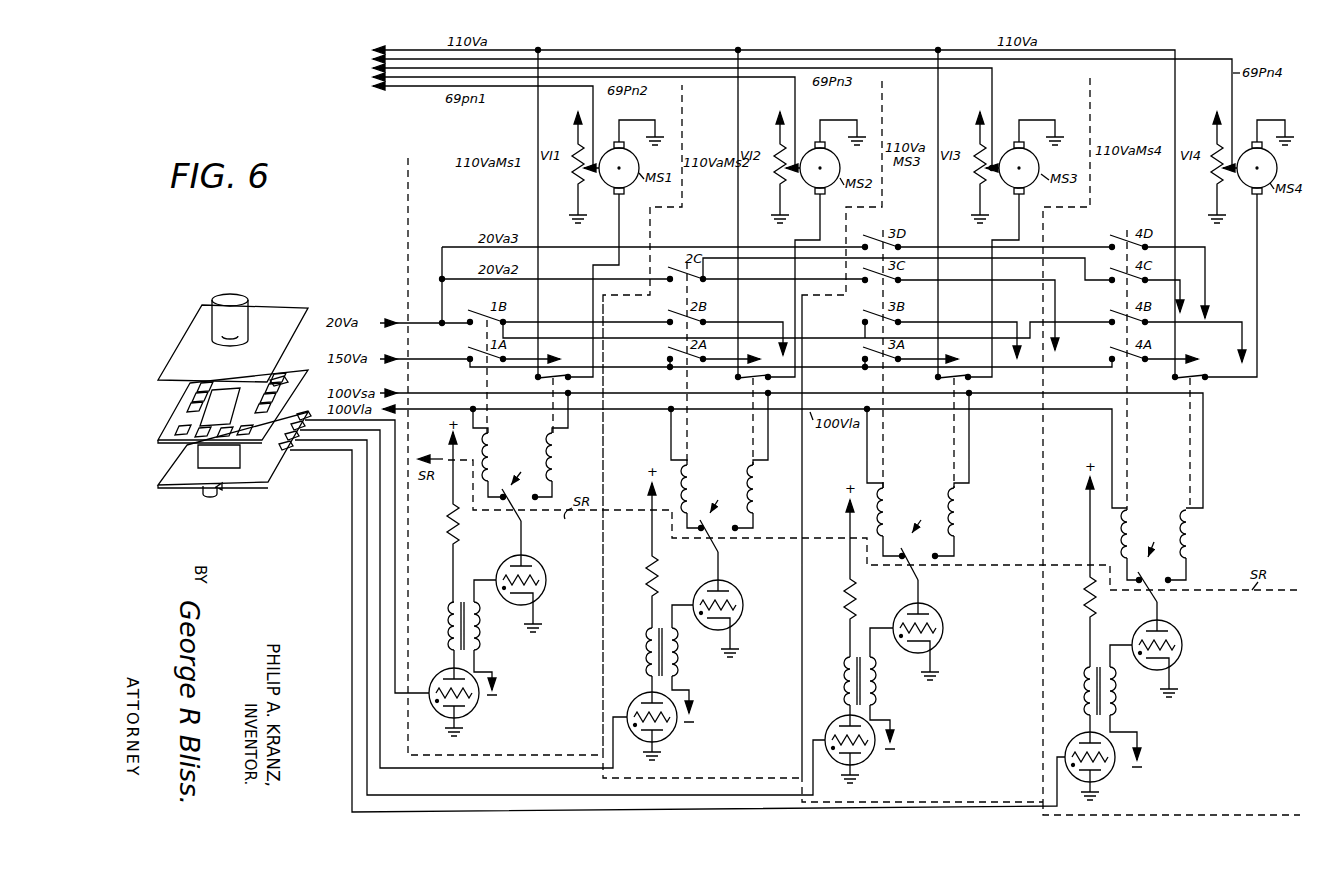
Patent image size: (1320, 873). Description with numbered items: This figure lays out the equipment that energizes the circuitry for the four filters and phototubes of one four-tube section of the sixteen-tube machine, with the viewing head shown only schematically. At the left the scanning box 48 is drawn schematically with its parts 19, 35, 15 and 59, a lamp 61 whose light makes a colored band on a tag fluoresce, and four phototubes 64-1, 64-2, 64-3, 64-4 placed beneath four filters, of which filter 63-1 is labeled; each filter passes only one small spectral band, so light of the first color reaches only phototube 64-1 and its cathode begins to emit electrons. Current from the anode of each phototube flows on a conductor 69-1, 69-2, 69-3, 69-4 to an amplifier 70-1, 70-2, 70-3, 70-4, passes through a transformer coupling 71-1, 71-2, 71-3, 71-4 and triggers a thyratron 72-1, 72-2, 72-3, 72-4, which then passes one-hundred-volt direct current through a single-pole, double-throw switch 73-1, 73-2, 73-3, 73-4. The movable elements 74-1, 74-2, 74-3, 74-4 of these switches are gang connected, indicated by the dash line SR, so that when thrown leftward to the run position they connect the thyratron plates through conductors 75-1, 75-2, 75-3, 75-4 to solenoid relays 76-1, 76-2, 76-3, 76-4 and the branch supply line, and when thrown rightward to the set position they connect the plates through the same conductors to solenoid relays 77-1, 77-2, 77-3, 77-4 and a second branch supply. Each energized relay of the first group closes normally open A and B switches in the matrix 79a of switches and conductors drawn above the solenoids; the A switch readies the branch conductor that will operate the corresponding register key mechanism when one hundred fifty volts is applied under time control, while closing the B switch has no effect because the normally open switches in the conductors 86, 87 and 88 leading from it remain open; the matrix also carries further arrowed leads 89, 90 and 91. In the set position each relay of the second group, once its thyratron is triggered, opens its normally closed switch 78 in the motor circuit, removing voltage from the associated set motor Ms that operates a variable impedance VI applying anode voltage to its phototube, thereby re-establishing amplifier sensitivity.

The scanning box 48 is at (230, 393).
The plunger 19 is at (240, 300).
The plunger tip 35 is at (226, 338).
The upper plate 15 is at (182, 362).
The filter 63-1 is at (281, 380).
The punched card 59 is at (232, 410).
The phototube 64-1 is at (302, 413).
The phototube 64-2 is at (296, 432).
The phototube 64-3 is at (290, 442).
The phototube 64-4 is at (283, 452).
The lamp 61 is at (213, 497).
The conductor 69-1 is at (395, 653).
The conductor 69-2 is at (380, 615).
The conductor 69-3 is at (367, 575).
The conductor 69-4 is at (352, 538).
The matrix of switches and conductors 79a is at (395, 190).
The normally closed switch 78 is at (543, 380).
The conductor 86 is at (546, 322).
The conductor 87 is at (614, 340).
The conductor 88 is at (972, 340).
The conductor 89 is at (1056, 300).
The conductor 90 is at (1183, 284).
The conductor 91 is at (1208, 288).
The amplifier 70-1 is at (470, 712).
The amplifier 70-2 is at (678, 742).
The amplifier 70-3 is at (880, 762).
The amplifier 70-4 is at (1115, 778).
The transformer coupling 71-1 is at (448, 630).
The transformer coupling 71-2 is at (648, 666).
The transformer coupling 71-3 is at (846, 683).
The transformer coupling 71-4 is at (1085, 695).
The thyratron 72-1 is at (546, 586).
The thyratron 72-2 is at (743, 610).
The thyratron 72-3 is at (945, 632).
The thyratron 72-4 is at (1185, 645).
The single-pole double-throw switch 73-1 is at (523, 470).
The single-pole double-throw switch 73-2 is at (720, 498).
The single-pole double-throw switch 73-3 is at (921, 517).
The single-pole double-throw switch 73-4 is at (1155, 540).
The movable switch element 74-1 is at (523, 501).
The movable switch element 74-2 is at (720, 532).
The movable switch element 74-3 is at (921, 560).
The movable switch element 74-4 is at (1157, 583).
The conductor 75-1 is at (523, 546).
The conductor 75-2 is at (722, 574).
The conductor 75-3 is at (922, 601).
The conductor 75-4 is at (1162, 620).
The solenoid relay 76-1 is at (492, 457).
The solenoid relay 76-2 is at (695, 464).
The solenoid relay 76-3 is at (895, 487).
The solenoid relay 76-4 is at (1135, 512).
The solenoid relay 77-1 is at (560, 457).
The solenoid relay 77-2 is at (763, 487).
The solenoid relay 77-3 is at (974, 508).
The solenoid relay 77-4 is at (1196, 535).